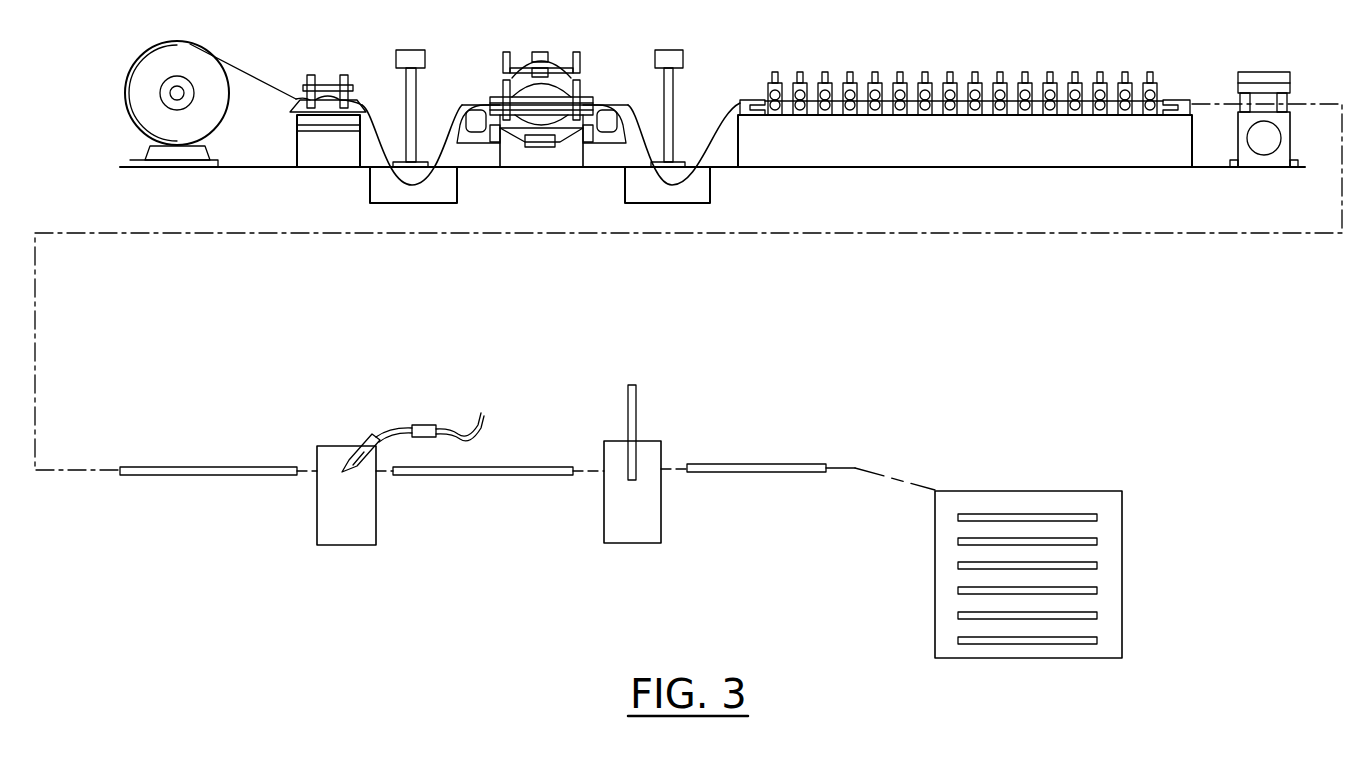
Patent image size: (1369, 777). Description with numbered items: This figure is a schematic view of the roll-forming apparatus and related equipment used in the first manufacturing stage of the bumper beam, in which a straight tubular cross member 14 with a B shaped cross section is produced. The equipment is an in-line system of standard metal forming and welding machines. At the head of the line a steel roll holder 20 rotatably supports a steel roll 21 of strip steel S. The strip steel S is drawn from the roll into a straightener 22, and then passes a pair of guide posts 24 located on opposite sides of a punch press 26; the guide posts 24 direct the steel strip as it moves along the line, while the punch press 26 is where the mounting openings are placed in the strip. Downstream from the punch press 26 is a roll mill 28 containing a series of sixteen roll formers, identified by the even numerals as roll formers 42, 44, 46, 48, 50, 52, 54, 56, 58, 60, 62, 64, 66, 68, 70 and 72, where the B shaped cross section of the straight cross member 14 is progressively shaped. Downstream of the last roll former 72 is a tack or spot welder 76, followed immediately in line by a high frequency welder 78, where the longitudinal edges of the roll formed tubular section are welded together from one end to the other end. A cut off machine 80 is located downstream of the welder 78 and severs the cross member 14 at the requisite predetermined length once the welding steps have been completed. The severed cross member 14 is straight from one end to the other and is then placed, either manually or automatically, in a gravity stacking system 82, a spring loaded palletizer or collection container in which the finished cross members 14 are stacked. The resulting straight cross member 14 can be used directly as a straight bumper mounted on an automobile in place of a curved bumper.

The strip steel S is at (244, 74).
The straight tubular cross member 14 is at (778, 464).
The steel roll holder 20 is at (150, 147).
The steel roll 21 is at (160, 93).
The straightener 22 is at (328, 86).
The guide posts 24 is at (396, 50).
The punch press 26 is at (497, 95).
The roll mill 28 is at (907, 153).
The roll former 42 is at (768, 88).
The roll former 44 is at (797, 72).
The roll former 46 is at (825, 72).
The roll former 48 is at (850, 72).
The roll former 50 is at (876, 72).
The roll former 52 is at (901, 72).
The roll former 54 is at (927, 72).
The roll former 56 is at (951, 72).
The roll former 58 is at (976, 72).
The roll former 60 is at (1001, 72).
The roll former 62 is at (1026, 72).
The roll former 64 is at (1051, 72).
The roll former 66 is at (1076, 72).
The roll former 68 is at (1101, 72).
The roll former 70 is at (1126, 72).
The roll former 72 is at (1151, 72).
The tack or spot welder 76 is at (1268, 75).
The high frequency welder 78 is at (327, 446).
The cut off machine 80 is at (610, 441).
The gravity stacking system 82 is at (1115, 555).